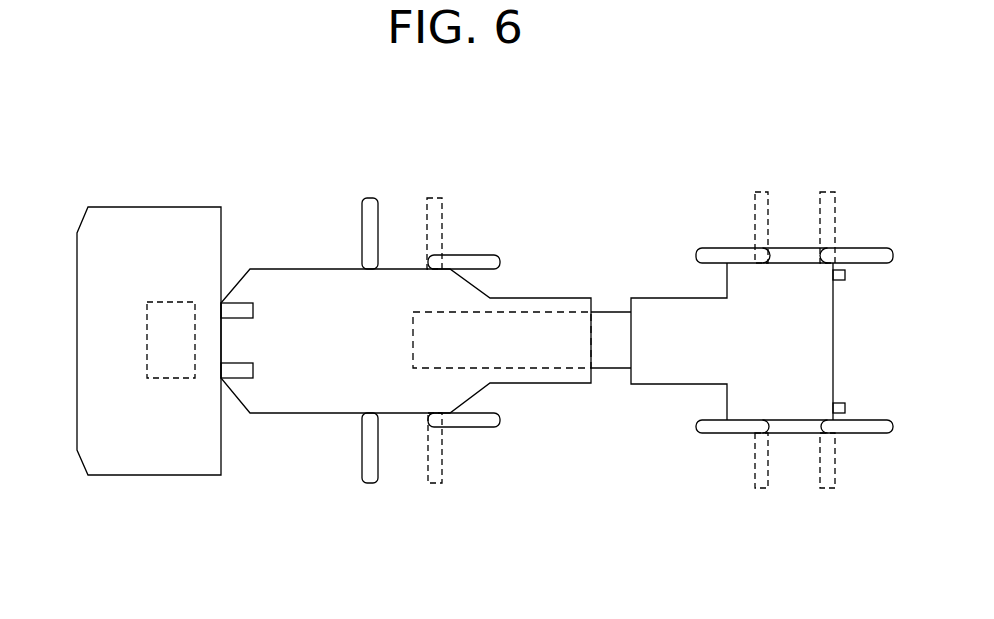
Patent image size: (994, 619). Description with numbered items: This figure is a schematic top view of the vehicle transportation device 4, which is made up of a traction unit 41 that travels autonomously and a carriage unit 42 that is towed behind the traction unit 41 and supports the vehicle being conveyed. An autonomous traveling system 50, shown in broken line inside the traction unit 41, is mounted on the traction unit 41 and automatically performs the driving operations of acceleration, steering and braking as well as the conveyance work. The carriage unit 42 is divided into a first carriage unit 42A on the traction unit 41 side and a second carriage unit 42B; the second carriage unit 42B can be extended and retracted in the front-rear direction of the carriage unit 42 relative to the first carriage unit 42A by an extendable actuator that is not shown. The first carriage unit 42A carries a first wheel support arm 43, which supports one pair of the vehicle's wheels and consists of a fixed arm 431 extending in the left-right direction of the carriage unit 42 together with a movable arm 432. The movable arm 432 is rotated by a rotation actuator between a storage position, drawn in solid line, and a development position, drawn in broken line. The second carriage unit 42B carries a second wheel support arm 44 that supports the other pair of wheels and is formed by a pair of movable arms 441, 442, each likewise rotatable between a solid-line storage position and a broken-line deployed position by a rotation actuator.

The vehicle transportation device 4 is at (314, 188).
The traction unit 41 is at (120, 232).
The autonomous traveling system 50 is at (147, 350).
The carriage unit 42 is at (533, 323).
The first carriage unit 42A is at (553, 308).
The second carriage unit 42B is at (657, 305).
The first wheel support arm 43 is at (450, 142).
The fixed arm 431 is at (368, 203).
The movable arm 432 is at (460, 260).
The second wheel support arm 44 is at (748, 142).
The movable arm 441 is at (728, 253).
The movable arm 442 is at (847, 253).